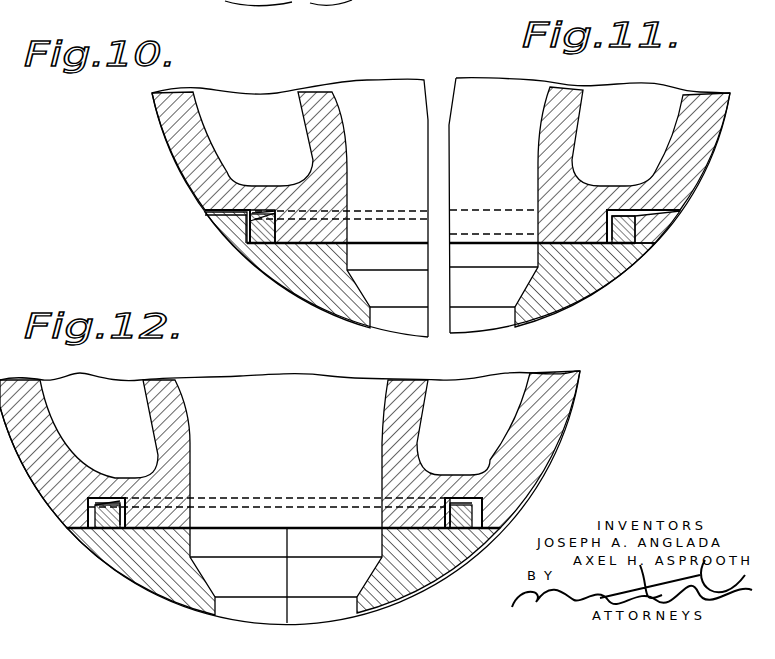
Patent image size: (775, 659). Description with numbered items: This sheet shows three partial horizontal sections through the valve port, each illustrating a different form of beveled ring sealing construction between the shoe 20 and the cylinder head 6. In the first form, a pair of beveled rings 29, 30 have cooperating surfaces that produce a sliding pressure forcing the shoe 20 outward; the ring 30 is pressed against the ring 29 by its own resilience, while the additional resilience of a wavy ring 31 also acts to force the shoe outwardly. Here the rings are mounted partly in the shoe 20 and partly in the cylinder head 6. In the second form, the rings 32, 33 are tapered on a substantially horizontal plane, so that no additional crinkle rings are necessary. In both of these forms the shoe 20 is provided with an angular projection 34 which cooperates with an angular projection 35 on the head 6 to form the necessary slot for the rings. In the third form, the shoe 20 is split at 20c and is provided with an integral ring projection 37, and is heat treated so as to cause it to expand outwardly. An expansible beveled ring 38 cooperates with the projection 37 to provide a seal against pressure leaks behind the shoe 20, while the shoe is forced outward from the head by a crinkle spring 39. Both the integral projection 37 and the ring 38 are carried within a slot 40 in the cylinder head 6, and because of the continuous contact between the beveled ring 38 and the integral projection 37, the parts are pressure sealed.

In FIG. 10, the cylinder head 6 is at (337, 160).
In FIG. 11, the cylinder head 6 is at (687, 132).
In FIG. 12, the cylinder head 6 is at (550, 425).
In FIG. 10, the shoe 20 is at (290, 268).
In FIG. 11, the shoe 20 is at (590, 213).
In FIG. 12, the shoe 20 is at (122, 552).
In FIG. 12, the split 20c is at (287, 545).
In FIG. 10, the beveled ring 29 is at (246, 240).
In FIG. 10, the beveled ring 30 is at (266, 243).
In FIG. 10, the wavy ring 31 is at (258, 228).
In FIG. 11, the ring 32 is at (633, 222).
In FIG. 11, the ring 33 is at (630, 247).
In FIG. 11, the angular projection 34 is at (678, 218).
In FIG. 11, the angular projection 35 is at (607, 227).
In FIG. 12, the integral ring projection 37 is at (113, 532).
In FIG. 12, the expansible beveled ring 38 is at (88, 515).
In FIG. 12, the crinkle spring 39 is at (97, 507).
In FIG. 12, the slot 40 is at (463, 497).